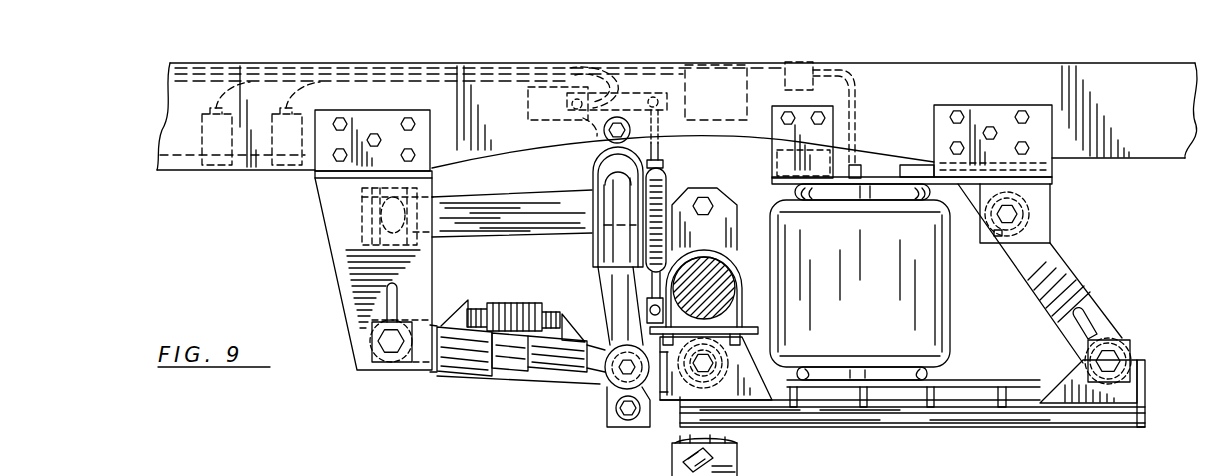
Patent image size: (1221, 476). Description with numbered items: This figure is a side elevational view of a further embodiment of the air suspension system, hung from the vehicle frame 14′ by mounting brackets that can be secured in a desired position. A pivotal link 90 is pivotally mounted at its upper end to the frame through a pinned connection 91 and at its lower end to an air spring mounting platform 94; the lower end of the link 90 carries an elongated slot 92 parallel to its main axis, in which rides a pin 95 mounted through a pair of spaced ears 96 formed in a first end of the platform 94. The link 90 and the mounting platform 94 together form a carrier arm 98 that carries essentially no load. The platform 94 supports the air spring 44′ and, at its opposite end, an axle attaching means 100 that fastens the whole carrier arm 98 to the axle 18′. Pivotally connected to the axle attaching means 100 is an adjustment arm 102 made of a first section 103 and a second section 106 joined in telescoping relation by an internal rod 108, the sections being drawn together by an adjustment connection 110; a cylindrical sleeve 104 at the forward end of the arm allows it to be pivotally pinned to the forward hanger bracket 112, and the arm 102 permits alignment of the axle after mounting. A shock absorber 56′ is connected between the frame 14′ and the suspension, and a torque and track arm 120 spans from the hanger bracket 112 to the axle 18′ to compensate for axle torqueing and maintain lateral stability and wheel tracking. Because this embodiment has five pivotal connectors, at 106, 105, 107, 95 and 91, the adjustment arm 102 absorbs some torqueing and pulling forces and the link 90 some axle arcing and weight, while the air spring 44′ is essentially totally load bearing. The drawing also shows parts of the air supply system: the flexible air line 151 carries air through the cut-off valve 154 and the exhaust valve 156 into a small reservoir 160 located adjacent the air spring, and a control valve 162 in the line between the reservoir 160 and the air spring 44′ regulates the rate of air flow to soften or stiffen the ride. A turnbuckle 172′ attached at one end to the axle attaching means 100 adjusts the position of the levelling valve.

The frame 14′ is at (1131, 150).
The air line 151 is at (355, 70).
The exhaust valve 156 is at (215, 166).
The cut-off valve 154 is at (285, 166).
The small reservoir 160 is at (696, 44).
The control valve 162 is at (790, 63).
The torque and track arm 120 is at (553, 203).
The turnbuckle 172′ is at (664, 183).
The forward hanger bracket 112 is at (343, 277).
The cylindrical sleeve 104 is at (352, 366).
The first section 103 is at (448, 368).
The internal rod 108 is at (506, 345).
The adjustment connection 110 is at (538, 301).
The second section 106 is at (552, 368).
The adjustment arm 102 is at (497, 383).
The shock absorber 56′ is at (612, 247).
The pivotal connection 105 is at (600, 390).
The axle 18′ is at (710, 366).
The axle attaching means 100 is at (756, 309).
The pivotal connection 107 is at (707, 287).
The air spring 44′ is at (940, 322).
The pinned connection 91 is at (1008, 220).
The pivotal link 90 is at (1087, 300).
The elongated slot 92 is at (1092, 325).
The pin 95 is at (1110, 357).
The spaced ears 96 is at (1127, 390).
The carrier arm 98 is at (967, 440).
The air spring mounting platform 94 is at (1073, 417).